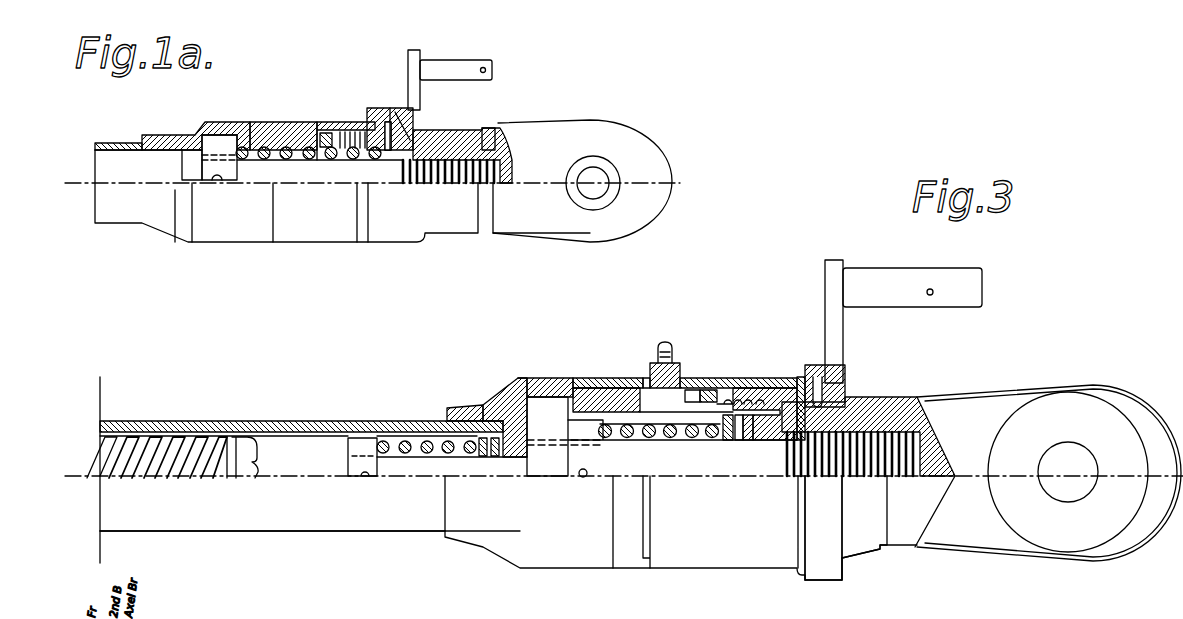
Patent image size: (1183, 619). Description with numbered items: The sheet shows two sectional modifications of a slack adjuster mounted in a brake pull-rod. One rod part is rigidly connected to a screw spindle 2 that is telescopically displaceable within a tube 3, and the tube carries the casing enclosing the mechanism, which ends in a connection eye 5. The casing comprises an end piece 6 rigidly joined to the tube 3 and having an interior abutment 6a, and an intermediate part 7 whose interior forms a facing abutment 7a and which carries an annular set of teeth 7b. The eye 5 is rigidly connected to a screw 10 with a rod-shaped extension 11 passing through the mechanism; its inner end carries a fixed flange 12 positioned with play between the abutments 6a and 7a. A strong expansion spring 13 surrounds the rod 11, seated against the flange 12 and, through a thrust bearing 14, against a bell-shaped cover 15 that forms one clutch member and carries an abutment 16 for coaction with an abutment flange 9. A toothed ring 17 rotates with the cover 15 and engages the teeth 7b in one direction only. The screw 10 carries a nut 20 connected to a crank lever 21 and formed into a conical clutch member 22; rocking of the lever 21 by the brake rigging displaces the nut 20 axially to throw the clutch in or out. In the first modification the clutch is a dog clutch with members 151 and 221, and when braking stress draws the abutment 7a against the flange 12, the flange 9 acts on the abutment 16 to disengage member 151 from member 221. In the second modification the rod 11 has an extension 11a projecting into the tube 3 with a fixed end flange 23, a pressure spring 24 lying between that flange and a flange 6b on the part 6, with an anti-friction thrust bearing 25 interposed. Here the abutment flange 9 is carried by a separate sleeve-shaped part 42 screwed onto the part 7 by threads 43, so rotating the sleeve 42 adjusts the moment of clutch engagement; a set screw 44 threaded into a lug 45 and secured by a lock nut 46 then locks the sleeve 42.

In FIG. 3, the screw spindle 2 is at (198, 437).
In FIG. 3, the tube 3 is at (262, 423).
In FIG. 3, the connection eye 5 is at (969, 530).
In FIG. 3, the end piece 6 is at (546, 380).
In FIG. 1A, the abutment 6a is at (196, 134).
In FIG. 3, the abutment 6a is at (508, 398).
In FIG. 3, the flange 6b is at (510, 458).
In FIG. 3, the intermediate part 7 is at (588, 378).
In FIG. 1A, the abutment 7a is at (258, 124).
In FIG. 3, the abutment 7a is at (578, 388).
In FIG. 3, the annular set of teeth 7b is at (690, 398).
In FIG. 1A, the abutment flange 9 is at (389, 88).
In FIG. 3, the abutment flange 9 is at (846, 386).
In FIG. 3, the screw 10 is at (857, 478).
In FIG. 3, the rod-shaped extension 11 is at (711, 457).
In FIG. 3, the extension 11a is at (408, 462).
In FIG. 1A, the fixed flange 12 is at (220, 140).
In FIG. 3, the fixed flange 12 is at (580, 458).
In FIG. 3, the expansion spring 13 is at (682, 442).
In FIG. 3, the thrust bearing 14 is at (738, 442).
In FIG. 3, the bell-shaped cover 15 is at (792, 377).
In FIG. 1A, the clutch member 151 is at (410, 126).
In FIG. 1A, the abutment 16 is at (367, 120).
In FIG. 3, the abutment 16 is at (815, 380).
In FIG. 3, the toothed ring 17 is at (740, 388).
In FIG. 1A, the nut 20 is at (497, 132).
In FIG. 3, the nut 20 is at (878, 392).
In FIG. 1A, the crank lever 21 is at (450, 80).
In FIG. 3, the crank lever 21 is at (825, 268).
In FIG. 3, the conical clutch member 22 is at (786, 442).
In FIG. 1A, the clutch member 221 is at (414, 130).
In FIG. 3, the fixed end flange 23 is at (362, 480).
In FIG. 3, the pressure spring 24 is at (388, 441).
In FIG. 3, the anti-friction thrust bearing 25 is at (472, 410).
In FIG. 3, the sleeve-shaped part 42 is at (745, 398).
In FIG. 3, the threads 43 is at (646, 384).
In FIG. 3, the set screw 44 is at (655, 362).
In FIG. 3, the lug 45 is at (700, 390).
In FIG. 3, the lock nut 46 is at (675, 362).